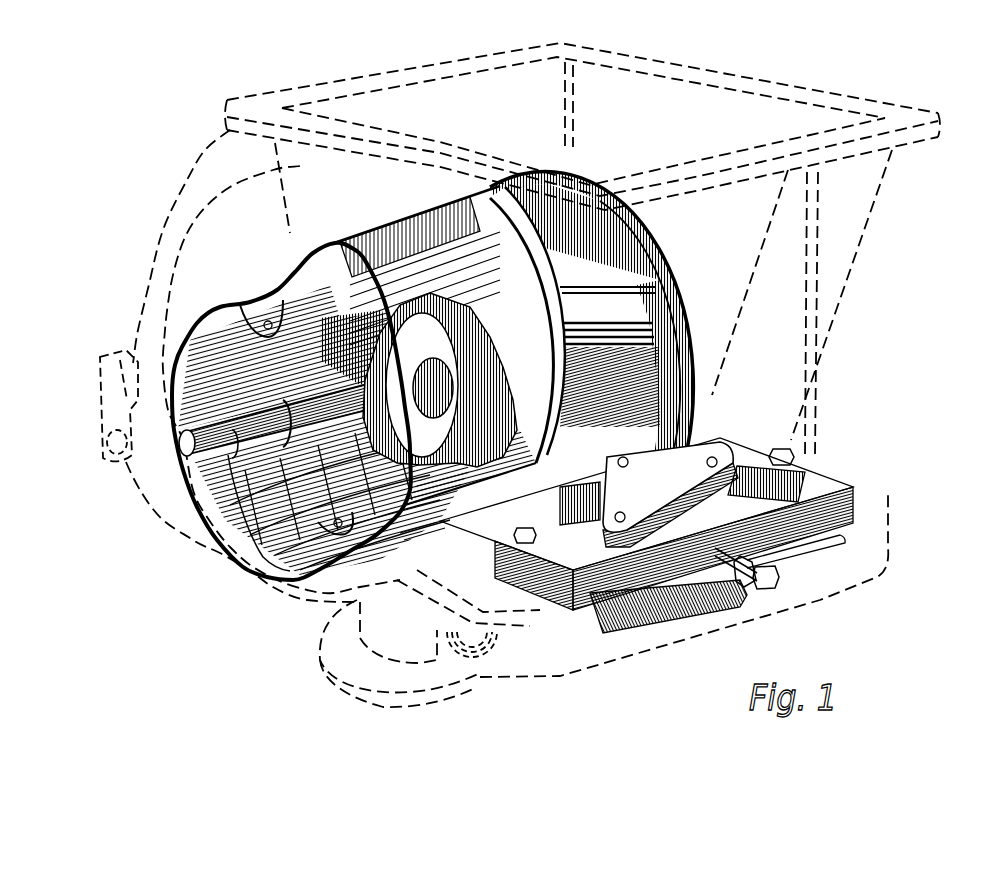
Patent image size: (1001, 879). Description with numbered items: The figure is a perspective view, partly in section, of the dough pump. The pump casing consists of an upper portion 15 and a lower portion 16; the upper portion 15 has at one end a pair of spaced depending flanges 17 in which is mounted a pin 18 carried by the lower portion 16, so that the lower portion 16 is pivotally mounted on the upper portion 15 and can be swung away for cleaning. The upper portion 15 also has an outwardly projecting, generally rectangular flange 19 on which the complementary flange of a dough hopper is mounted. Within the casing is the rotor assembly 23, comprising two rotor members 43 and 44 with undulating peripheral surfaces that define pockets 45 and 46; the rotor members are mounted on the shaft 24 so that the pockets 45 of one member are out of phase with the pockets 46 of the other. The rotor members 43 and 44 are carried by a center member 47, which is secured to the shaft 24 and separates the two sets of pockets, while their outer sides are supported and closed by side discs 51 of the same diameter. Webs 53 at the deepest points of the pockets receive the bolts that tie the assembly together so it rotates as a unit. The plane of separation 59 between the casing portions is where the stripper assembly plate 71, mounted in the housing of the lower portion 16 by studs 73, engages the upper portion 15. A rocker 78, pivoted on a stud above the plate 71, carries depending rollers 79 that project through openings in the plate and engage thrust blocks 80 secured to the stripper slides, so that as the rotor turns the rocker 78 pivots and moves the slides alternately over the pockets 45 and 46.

The upper portion of the pump casing 15 is at (163, 282).
The lower portion of the pump casing 16 is at (625, 655).
The depending flanges 17 is at (110, 422).
The pin 18 is at (117, 452).
The outwardly projecting flange 19 is at (240, 107).
The rotor assembly 23 is at (237, 543).
The shaft 24 is at (180, 457).
The rotor member 43 is at (307, 252).
The rotor member 44 is at (450, 200).
The pockets 45 is at (261, 300).
The pockets 46 is at (563, 240).
The center member 47 is at (377, 217).
The side discs 51 is at (657, 258).
The webs 53 is at (266, 312).
The plane of separation 59 is at (530, 625).
The stripper assembly plate 71 is at (820, 493).
The studs 73 is at (793, 452).
The rocker 78 is at (682, 465).
The rollers 79 is at (750, 487).
The thrust blocks 80 is at (530, 560).